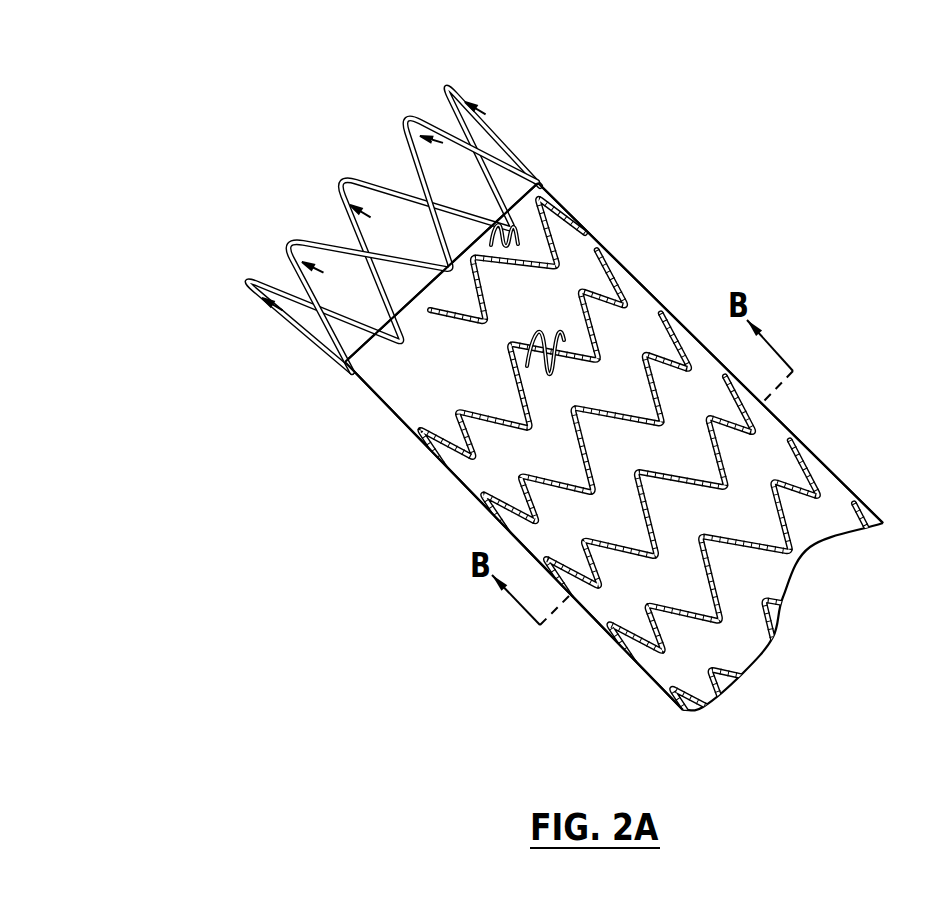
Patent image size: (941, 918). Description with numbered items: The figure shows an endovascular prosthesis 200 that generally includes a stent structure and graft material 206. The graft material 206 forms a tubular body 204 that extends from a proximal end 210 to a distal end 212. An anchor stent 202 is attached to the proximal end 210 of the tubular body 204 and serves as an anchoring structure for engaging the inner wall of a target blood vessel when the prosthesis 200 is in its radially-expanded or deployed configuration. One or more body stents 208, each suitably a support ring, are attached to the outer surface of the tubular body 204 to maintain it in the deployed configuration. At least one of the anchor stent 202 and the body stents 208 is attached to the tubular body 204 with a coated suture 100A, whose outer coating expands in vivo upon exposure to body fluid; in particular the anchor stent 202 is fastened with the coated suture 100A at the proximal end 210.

The coated suture 100A is at (547, 335).
The endovascular prosthesis 200 is at (318, 452).
The anchor stent 202 is at (347, 231).
The tubular body 204 is at (707, 367).
The graft material 206 is at (770, 450).
The body stent 208 is at (527, 410).
The proximal end 210 is at (442, 268).
The distal end 212 is at (775, 637).